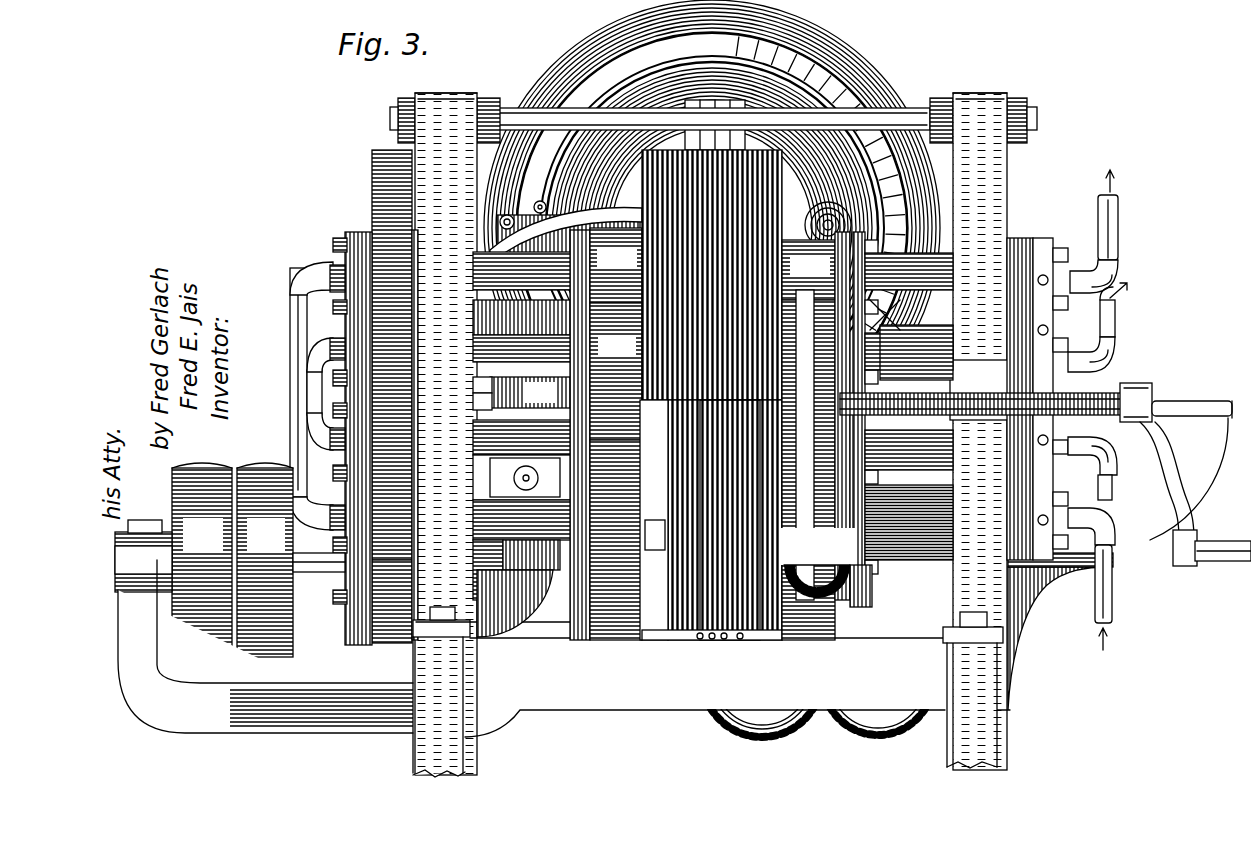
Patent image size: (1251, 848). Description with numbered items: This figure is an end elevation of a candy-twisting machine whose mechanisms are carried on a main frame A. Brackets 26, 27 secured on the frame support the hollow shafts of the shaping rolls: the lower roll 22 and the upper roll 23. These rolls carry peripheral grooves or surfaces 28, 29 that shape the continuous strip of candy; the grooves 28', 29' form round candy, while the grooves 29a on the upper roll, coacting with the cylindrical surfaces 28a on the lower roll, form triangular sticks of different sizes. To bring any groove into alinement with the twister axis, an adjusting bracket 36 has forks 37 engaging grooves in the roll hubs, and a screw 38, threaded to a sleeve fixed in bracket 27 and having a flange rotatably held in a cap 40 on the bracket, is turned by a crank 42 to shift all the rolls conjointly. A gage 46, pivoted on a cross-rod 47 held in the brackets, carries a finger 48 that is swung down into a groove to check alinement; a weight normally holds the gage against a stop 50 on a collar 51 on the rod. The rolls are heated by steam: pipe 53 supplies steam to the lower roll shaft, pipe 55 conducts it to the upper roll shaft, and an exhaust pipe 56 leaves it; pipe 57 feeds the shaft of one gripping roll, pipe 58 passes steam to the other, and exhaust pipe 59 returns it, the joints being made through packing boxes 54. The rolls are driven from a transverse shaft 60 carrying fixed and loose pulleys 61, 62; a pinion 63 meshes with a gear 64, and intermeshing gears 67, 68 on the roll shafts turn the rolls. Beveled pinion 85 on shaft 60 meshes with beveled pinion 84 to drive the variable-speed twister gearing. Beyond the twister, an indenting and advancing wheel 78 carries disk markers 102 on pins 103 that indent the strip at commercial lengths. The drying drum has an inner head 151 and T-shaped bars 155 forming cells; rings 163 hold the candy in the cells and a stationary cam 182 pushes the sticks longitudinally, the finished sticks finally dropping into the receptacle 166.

The rings 163 is at (627, 60).
The stationary cam 182 is at (712, 228).
The gage 46 is at (790, 70).
The finger 48 is at (812, 85).
The bars 155 is at (775, 150).
The inner head 151 is at (893, 88).
The cross-rod 47 is at (548, 112).
The stop 50 is at (708, 100).
The collar 51 is at (690, 100).
The upper roll 23 is at (640, 170).
The gear 68 is at (380, 208).
The gear 67 is at (374, 608).
The bracket 26 is at (445, 435).
The bracket 27 is at (980, 431).
The pipe 55 is at (292, 398).
The pipe 58 is at (312, 385).
The loose pulley 62 is at (202, 560).
The fixed pulley 61 is at (265, 560).
The transverse shaft 60 is at (350, 578).
The main frame A is at (615, 663).
The indenting and advancing wheel 78 is at (532, 392).
The markers 102 is at (478, 385).
The pins 103 is at (478, 401).
The gear 64 is at (472, 566).
The pinion 63 is at (478, 620).
The grooves 29a is at (660, 260).
The peripheral grooves or surfaces 29 is at (616, 371).
The peripheral grooves or surfaces 28 is at (711, 395).
The groove 28' is at (699, 520).
The cylindrical surfaces 28a is at (657, 535).
The lower roll 22 is at (702, 642).
The groove 29' is at (791, 270).
The adjusting bracket 36 is at (801, 445).
The forks 37 is at (860, 290).
The beveled pinion 84 is at (828, 612).
The beveled pinion 85 is at (872, 598).
The cap 40 is at (848, 360).
The packing boxes 54 is at (1028, 340).
The screw 38 is at (1100, 392).
The receptacle 166 is at (1191, 470).
The crank 42 is at (1188, 520).
The exhaust pipe 56 is at (1119, 229).
The exhaust pipe 59 is at (1118, 318).
The pipe 57 is at (1112, 485).
The pipe 53 is at (1114, 586).